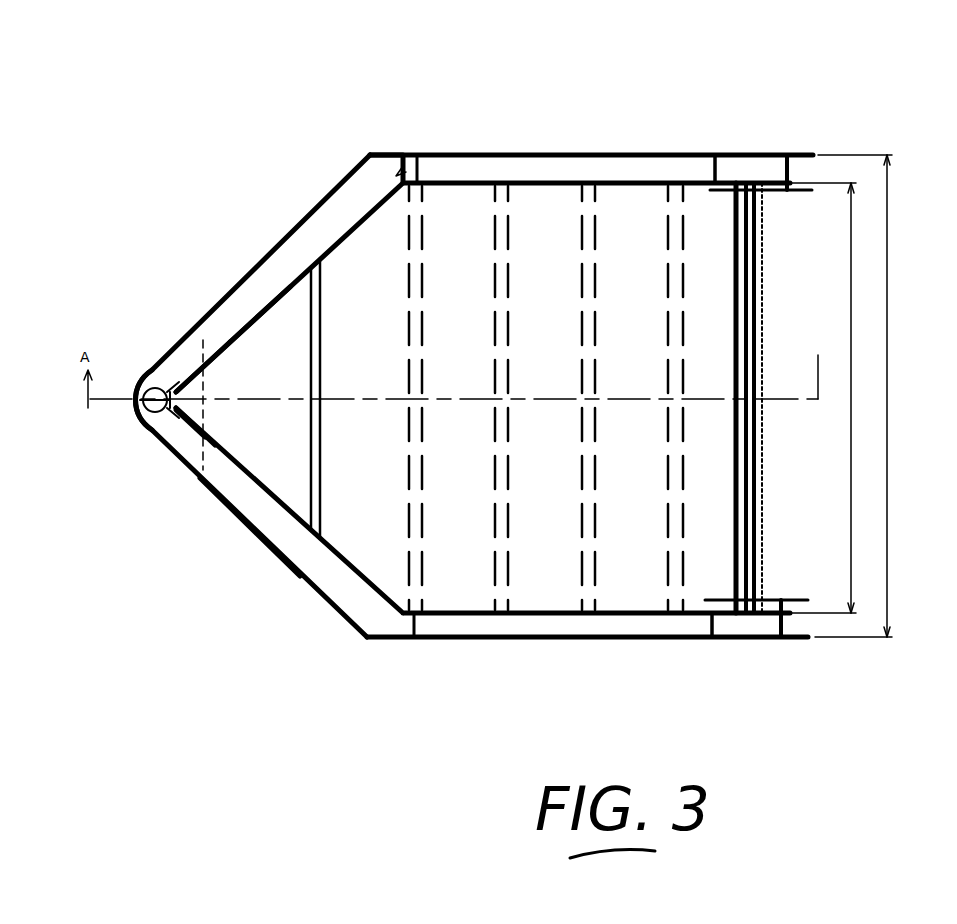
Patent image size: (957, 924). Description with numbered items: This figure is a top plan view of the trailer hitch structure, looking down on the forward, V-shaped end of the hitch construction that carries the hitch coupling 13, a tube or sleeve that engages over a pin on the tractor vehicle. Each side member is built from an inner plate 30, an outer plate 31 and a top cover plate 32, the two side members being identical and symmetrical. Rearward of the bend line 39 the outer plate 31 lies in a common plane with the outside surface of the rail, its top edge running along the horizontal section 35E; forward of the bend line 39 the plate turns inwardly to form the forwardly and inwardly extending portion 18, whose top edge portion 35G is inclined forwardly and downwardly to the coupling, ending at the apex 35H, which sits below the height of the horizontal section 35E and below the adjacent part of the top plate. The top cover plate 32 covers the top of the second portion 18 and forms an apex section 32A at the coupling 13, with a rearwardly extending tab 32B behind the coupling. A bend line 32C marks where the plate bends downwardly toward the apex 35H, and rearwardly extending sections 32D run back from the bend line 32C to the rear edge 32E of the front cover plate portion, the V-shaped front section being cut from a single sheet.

The hitch coupling 13 is at (162, 430).
The forwardly and inwardly extending portion 18 is at (297, 533).
The inner plate 30 is at (527, 192).
The outer plate 31 is at (530, 155).
The top cover plate 32 is at (403, 164).
The apex section 32A is at (175, 372).
The rearwardly extending tab 32B is at (220, 367).
The bend line 32C is at (210, 343).
The rearwardly extending sections 32D is at (300, 247).
The rear edge 32E is at (423, 178).
The horizontal section 35E is at (600, 638).
The portion 35G is at (233, 513).
The apex 35H is at (140, 385).
The bend line 39 is at (370, 155).